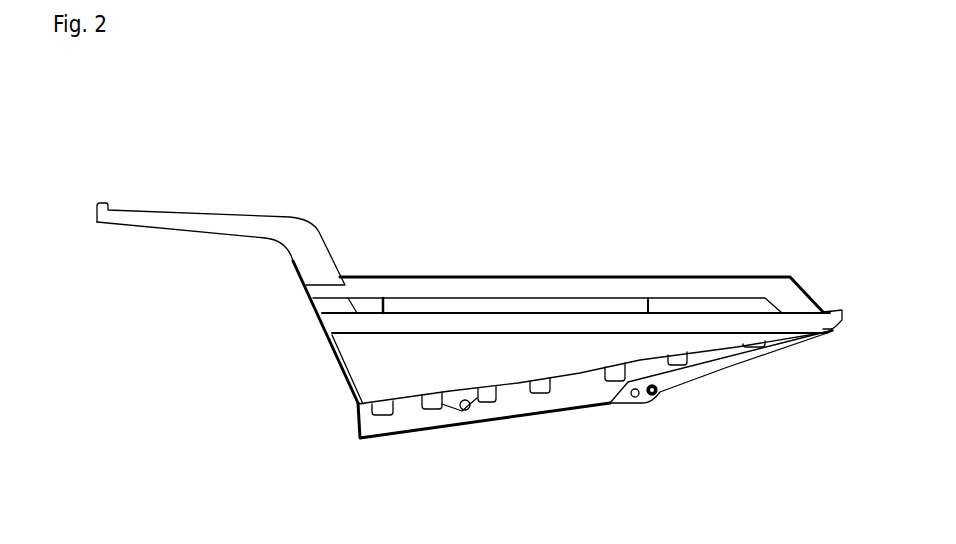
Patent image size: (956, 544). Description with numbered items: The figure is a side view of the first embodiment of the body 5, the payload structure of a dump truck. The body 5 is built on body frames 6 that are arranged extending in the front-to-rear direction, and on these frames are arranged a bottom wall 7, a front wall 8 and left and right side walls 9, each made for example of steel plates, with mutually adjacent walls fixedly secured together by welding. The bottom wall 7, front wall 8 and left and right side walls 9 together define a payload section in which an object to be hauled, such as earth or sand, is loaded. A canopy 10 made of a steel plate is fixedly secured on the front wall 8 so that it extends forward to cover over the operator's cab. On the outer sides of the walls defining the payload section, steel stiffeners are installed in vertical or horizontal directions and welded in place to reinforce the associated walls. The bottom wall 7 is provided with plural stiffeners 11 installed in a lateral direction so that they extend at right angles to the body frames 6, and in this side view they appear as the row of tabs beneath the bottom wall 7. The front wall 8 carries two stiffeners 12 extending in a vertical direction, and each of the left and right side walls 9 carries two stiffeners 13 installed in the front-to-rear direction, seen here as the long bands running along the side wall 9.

The body 5 is at (708, 275).
The body frames 6 is at (593, 407).
The bottom wall 7 is at (510, 385).
The front wall 8 is at (340, 350).
The left and right side walls 9 is at (408, 370).
The canopy 10 is at (202, 212).
The stiffeners 11 is at (486, 404).
The stiffeners 12 is at (348, 382).
The stiffeners 13 is at (541, 313).